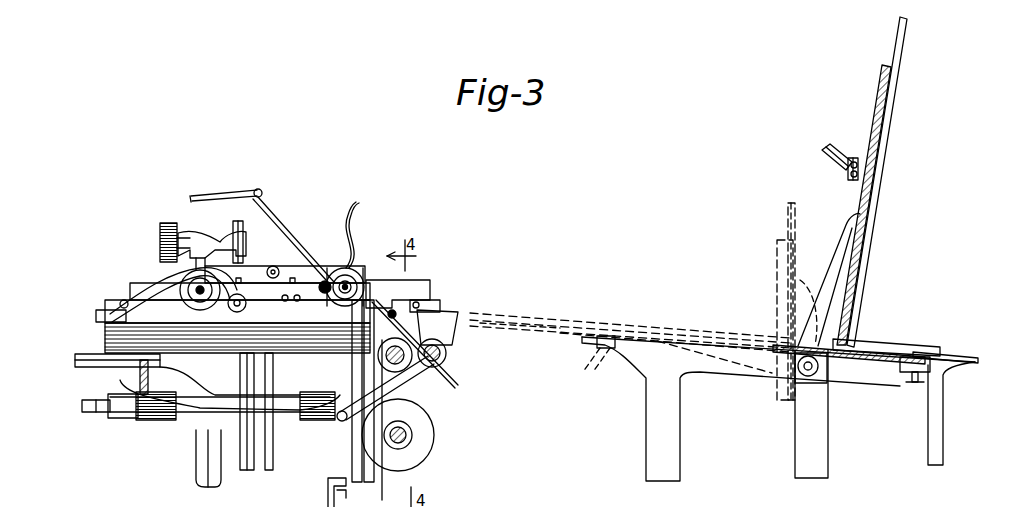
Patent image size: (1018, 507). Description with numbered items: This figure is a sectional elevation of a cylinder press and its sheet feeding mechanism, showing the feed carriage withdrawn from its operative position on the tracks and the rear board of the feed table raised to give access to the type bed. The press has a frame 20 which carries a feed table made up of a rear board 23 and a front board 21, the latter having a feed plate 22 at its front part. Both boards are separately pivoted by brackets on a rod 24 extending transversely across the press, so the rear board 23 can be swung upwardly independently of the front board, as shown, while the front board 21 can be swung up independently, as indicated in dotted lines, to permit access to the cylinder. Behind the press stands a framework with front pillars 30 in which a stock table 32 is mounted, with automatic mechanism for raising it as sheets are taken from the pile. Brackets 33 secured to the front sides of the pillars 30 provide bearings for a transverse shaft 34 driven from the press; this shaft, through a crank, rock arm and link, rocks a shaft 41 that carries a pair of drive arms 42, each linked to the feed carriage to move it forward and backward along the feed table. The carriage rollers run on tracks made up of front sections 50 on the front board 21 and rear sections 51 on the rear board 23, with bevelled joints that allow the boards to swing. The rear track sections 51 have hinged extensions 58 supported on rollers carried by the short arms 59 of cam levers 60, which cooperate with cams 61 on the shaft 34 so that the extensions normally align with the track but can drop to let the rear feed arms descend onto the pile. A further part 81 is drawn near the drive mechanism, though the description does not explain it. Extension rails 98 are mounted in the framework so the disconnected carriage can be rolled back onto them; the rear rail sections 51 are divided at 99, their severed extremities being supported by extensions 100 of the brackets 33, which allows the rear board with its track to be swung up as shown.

The frame 20 is at (650, 421).
The front board 21 is at (786, 283).
The feed plate 22 is at (786, 208).
The rear board 23 is at (656, 331).
The rod 24 is at (822, 371).
The front pillars 30 is at (358, 430).
The stock table 32 is at (122, 364).
The brackets 33 is at (395, 391).
The transverse shaft 34 is at (410, 428).
The shaft 41 is at (422, 366).
The drive arms 42 is at (270, 204).
The front track sections 50 is at (795, 249).
The rear track sections 51 is at (482, 304).
The track extensions 58 is at (395, 298).
The short arms 59 is at (446, 341).
The cam levers 60 is at (440, 380).
The cams 61 is at (430, 441).
The cable 81 is at (357, 216).
The extension rails 98 is at (128, 310).
The division of rear rail sections 99 is at (440, 298).
The extensions 100 is at (470, 328).